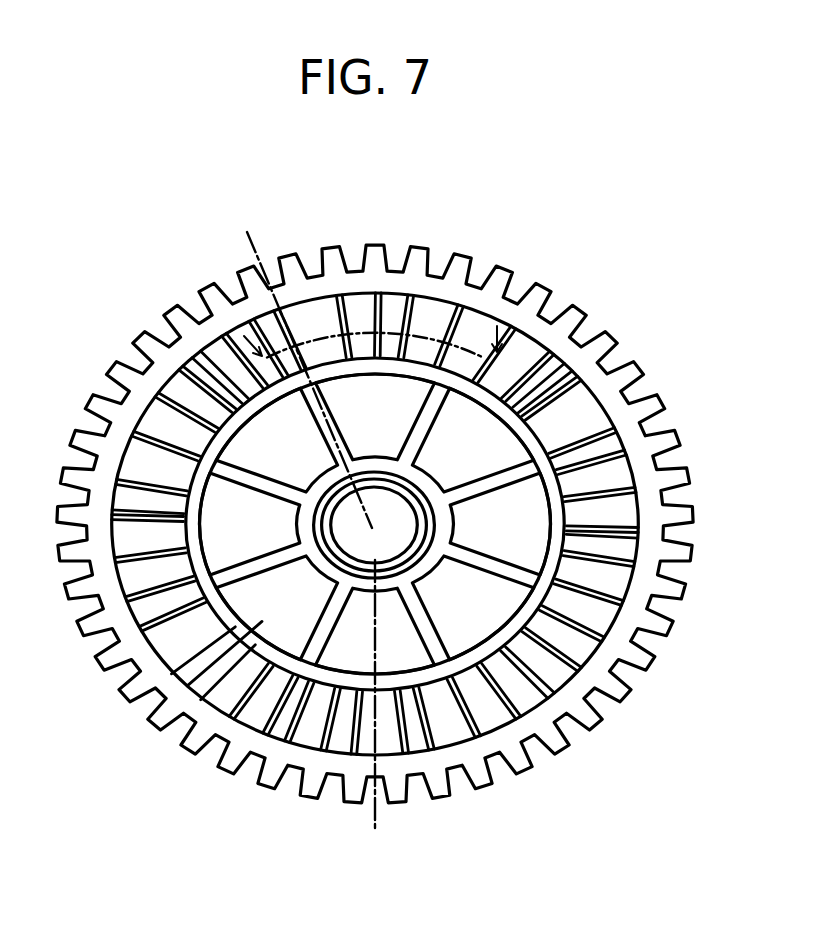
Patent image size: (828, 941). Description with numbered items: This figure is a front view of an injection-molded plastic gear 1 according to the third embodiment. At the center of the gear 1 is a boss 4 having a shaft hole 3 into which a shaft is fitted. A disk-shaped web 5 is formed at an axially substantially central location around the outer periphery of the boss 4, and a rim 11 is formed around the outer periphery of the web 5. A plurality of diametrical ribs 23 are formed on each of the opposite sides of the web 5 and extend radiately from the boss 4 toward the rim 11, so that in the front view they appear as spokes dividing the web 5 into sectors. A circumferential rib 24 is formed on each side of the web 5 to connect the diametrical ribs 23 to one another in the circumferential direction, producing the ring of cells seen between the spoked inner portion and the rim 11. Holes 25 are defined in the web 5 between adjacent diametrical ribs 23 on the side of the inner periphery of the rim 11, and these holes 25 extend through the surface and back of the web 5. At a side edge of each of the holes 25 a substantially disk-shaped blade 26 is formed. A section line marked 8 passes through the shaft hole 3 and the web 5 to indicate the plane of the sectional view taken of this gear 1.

The injection-molded plastic gear 1 is at (584, 305).
The shaft hole 3 is at (378, 558).
The boss 4 is at (240, 768).
The web 5 is at (310, 320).
The section line 8- 8 is at (266, 242).
The rim 11 is at (548, 712).
The diametrical ribs 23 is at (240, 310).
The circumferential rib 24 is at (123, 680).
The holes 25 is at (357, 313).
The blade 26 is at (393, 317).